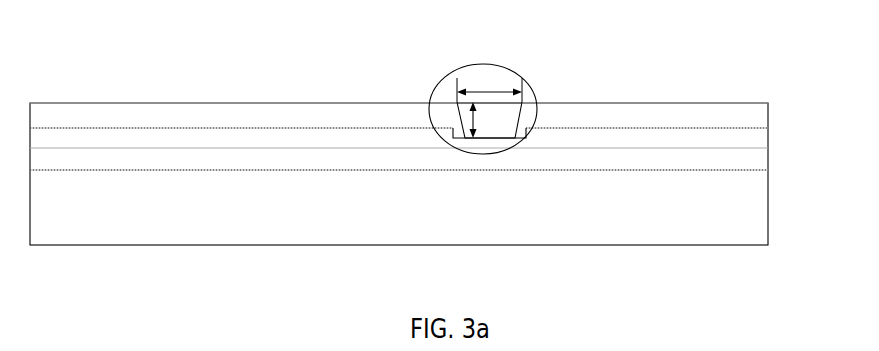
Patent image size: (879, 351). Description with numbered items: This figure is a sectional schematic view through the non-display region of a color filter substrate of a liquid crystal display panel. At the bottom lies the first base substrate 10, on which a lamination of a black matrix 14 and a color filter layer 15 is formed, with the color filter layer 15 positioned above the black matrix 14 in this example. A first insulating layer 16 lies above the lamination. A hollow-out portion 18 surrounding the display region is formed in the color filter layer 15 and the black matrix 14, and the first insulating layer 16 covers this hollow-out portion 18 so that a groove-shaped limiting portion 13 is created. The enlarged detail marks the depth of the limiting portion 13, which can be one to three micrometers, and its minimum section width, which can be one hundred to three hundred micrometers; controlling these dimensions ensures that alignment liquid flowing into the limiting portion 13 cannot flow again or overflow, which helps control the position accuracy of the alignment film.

The first base substrate 10 is at (776, 216).
The limiting portion 13 is at (536, 85).
The black matrix 14 is at (776, 160).
The color filter layer 15 is at (776, 140).
The first insulating layer 16 is at (776, 116).
The hollow-out portion 18 is at (453, 138).